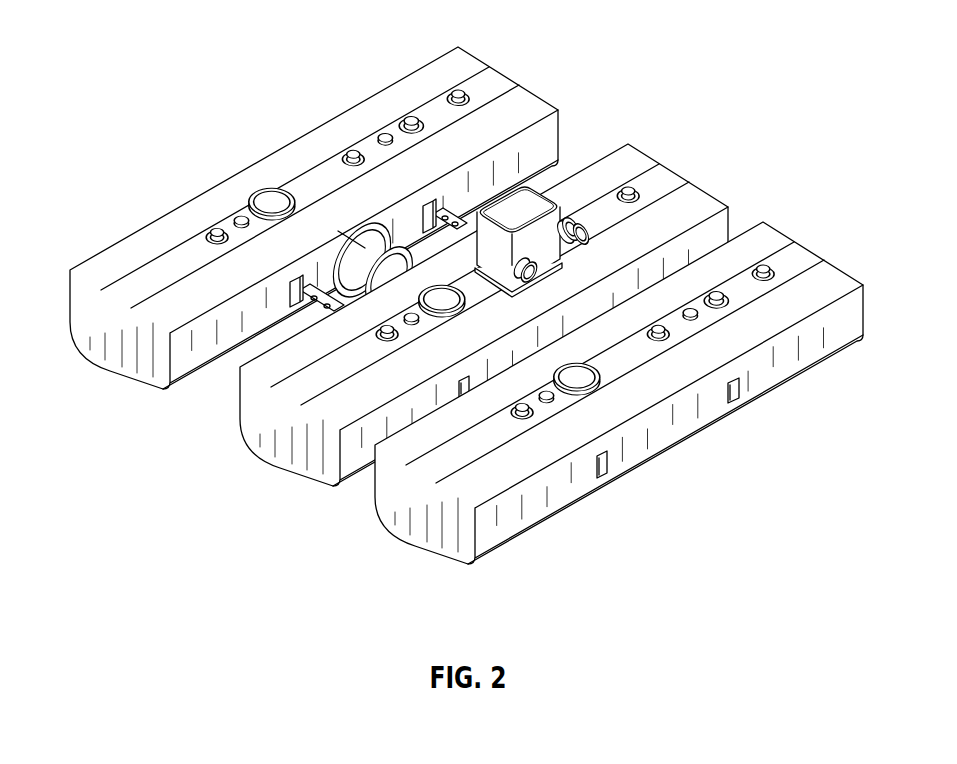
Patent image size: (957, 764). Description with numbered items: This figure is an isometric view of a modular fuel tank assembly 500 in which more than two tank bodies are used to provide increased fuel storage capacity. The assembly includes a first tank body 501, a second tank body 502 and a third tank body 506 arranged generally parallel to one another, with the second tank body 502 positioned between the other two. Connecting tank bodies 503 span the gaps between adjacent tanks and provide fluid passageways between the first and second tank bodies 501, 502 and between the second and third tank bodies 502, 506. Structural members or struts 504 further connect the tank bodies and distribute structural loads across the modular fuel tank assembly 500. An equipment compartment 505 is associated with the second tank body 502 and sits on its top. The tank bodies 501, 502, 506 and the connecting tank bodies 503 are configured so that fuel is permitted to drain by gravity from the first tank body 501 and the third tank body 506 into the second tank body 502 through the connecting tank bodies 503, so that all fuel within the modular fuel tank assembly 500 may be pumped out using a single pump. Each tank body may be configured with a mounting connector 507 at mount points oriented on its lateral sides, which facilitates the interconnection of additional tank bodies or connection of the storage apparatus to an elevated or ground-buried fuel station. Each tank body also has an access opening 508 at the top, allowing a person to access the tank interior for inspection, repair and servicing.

The modular fuel tank assembly 500 is at (246, 34).
The first tank body 501 is at (95, 360).
The second tank body 502 is at (282, 470).
The connecting tank body 503 is at (367, 253).
The strut 504 is at (300, 317).
The equipment compartment 505 is at (509, 212).
The third tank body 506 is at (417, 543).
The mounting connector 507 is at (606, 468).
The access opening 508 is at (262, 188).